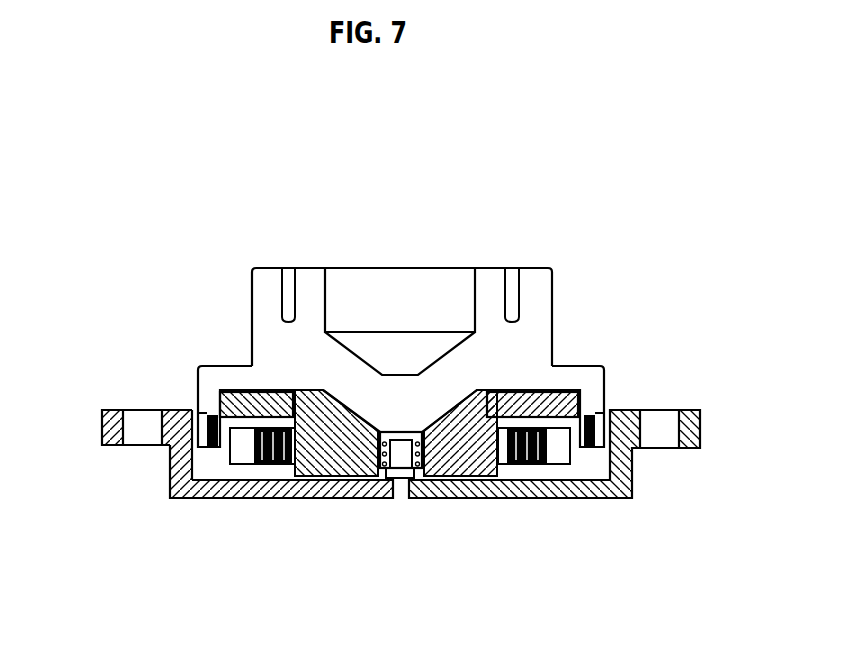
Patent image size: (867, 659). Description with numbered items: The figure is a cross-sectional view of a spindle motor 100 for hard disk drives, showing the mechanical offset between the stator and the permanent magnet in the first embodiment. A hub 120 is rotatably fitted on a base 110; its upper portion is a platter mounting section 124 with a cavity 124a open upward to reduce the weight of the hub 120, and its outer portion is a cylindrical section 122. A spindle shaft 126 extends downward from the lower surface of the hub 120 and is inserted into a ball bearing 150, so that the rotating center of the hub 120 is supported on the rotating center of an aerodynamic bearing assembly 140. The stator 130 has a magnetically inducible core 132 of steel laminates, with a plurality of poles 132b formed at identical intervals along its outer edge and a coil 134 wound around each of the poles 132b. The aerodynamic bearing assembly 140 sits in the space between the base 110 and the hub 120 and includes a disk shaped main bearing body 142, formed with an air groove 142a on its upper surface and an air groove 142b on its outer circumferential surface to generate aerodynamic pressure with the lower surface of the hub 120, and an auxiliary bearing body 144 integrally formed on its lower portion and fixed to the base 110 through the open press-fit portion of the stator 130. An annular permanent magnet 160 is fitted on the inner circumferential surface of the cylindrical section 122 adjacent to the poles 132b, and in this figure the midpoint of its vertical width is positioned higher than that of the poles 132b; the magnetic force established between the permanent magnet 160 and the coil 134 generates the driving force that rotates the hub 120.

The spindle motor 100 is at (634, 332).
The base 110 is at (642, 491).
The hub 120 is at (249, 360).
The cylindrical section 122 is at (153, 410).
The platter mounting section 124 is at (240, 266).
The cavity 124a is at (423, 297).
The spindle shaft 126 is at (405, 479).
The stator 130 is at (283, 461).
The core 132 is at (320, 388).
The poles 132b is at (230, 463).
The coil 134 is at (527, 465).
The aerodynamic bearing assembly 140 is at (344, 497).
The main bearing body 142 is at (518, 392).
The air groove 142a is at (535, 392).
The air groove 142b is at (607, 403).
The auxiliary bearing body 144 is at (508, 497).
The ball bearing 150 is at (352, 430).
The permanent magnet 160 is at (172, 462).